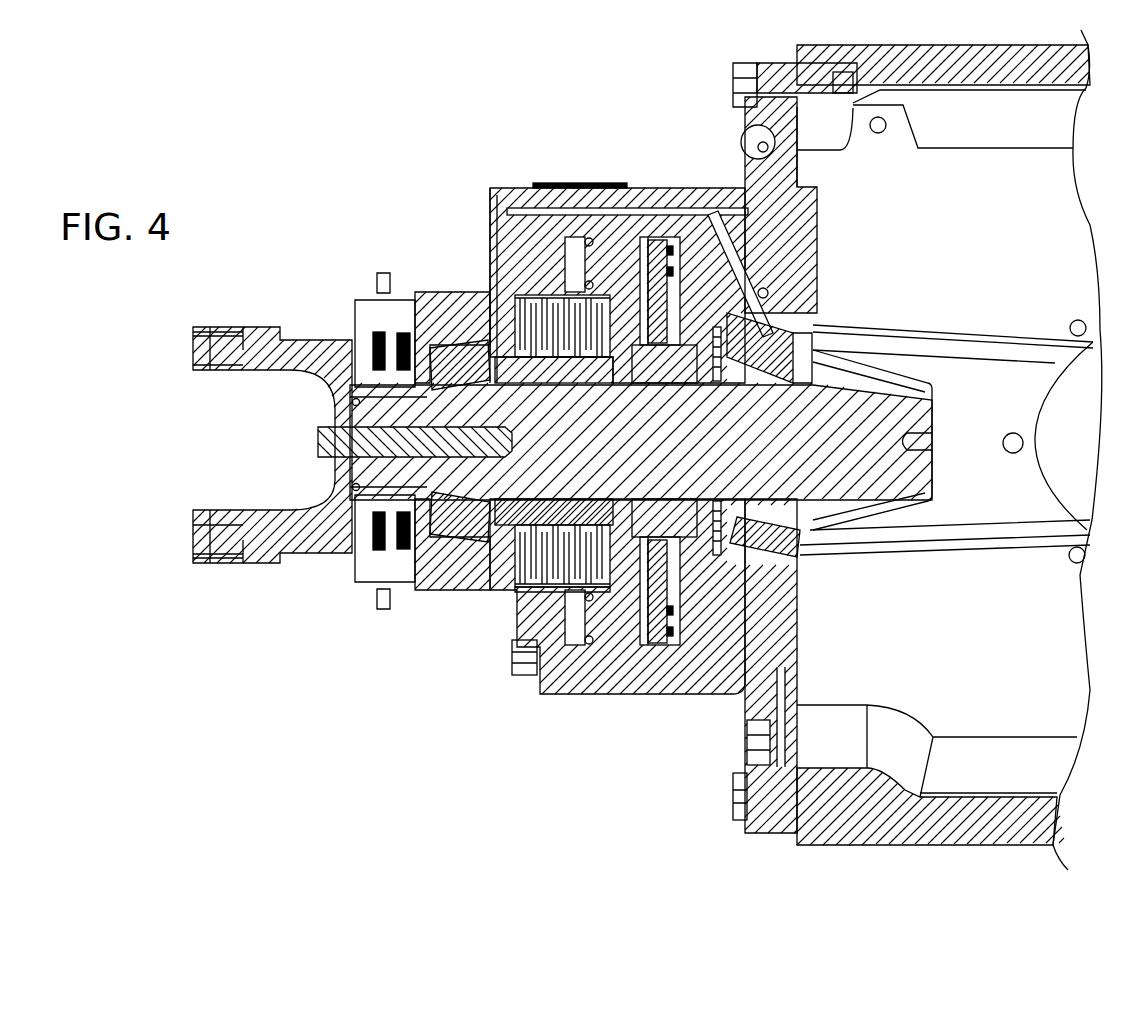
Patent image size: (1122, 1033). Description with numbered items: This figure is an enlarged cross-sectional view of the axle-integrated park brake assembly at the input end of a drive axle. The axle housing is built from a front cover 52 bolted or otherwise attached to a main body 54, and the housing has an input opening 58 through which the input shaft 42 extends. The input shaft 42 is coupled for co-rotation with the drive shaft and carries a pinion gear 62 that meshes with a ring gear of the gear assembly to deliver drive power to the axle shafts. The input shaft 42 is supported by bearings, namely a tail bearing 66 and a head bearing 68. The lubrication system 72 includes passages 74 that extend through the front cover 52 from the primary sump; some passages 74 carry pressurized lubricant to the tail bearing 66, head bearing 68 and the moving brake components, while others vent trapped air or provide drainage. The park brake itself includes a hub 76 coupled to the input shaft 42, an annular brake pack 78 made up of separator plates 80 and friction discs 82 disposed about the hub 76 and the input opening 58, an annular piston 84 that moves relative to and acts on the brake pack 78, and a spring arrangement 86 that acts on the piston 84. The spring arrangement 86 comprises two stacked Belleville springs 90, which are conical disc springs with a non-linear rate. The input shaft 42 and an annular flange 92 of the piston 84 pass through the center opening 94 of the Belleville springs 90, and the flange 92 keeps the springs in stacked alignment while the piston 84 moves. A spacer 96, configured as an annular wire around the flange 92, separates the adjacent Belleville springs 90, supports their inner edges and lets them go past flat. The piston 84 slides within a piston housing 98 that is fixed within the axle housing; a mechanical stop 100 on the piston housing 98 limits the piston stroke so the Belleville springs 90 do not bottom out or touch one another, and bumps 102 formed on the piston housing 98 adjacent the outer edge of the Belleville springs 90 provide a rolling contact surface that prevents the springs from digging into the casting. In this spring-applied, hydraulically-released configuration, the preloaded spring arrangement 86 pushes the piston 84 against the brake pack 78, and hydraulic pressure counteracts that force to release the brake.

The input shaft 42 is at (905, 452).
The front cover 52 is at (428, 300).
The main body 54 is at (612, 200).
The input opening 58 is at (372, 382).
The pinion gear 62 is at (900, 375).
The tail bearing 66 is at (458, 538).
The head bearing 68 is at (785, 565).
The lubrication system 72 is at (534, 205).
The passages 74 is at (533, 213).
The hub 76 is at (515, 416).
The annular brake pack 78 is at (512, 560).
The separator plates 80 is at (534, 600).
The friction discs 82 is at (543, 530).
The annular piston 84 is at (625, 345).
The spring arrangement 86 is at (663, 233).
The Belleville springs 90 is at (674, 271).
The annular flange 92 is at (667, 350).
The center opening 94 is at (690, 545).
The spacer 96 is at (655, 338).
The piston housing 98 is at (586, 232).
The mechanical stop 100 is at (712, 357).
The bumps 102 is at (643, 237).